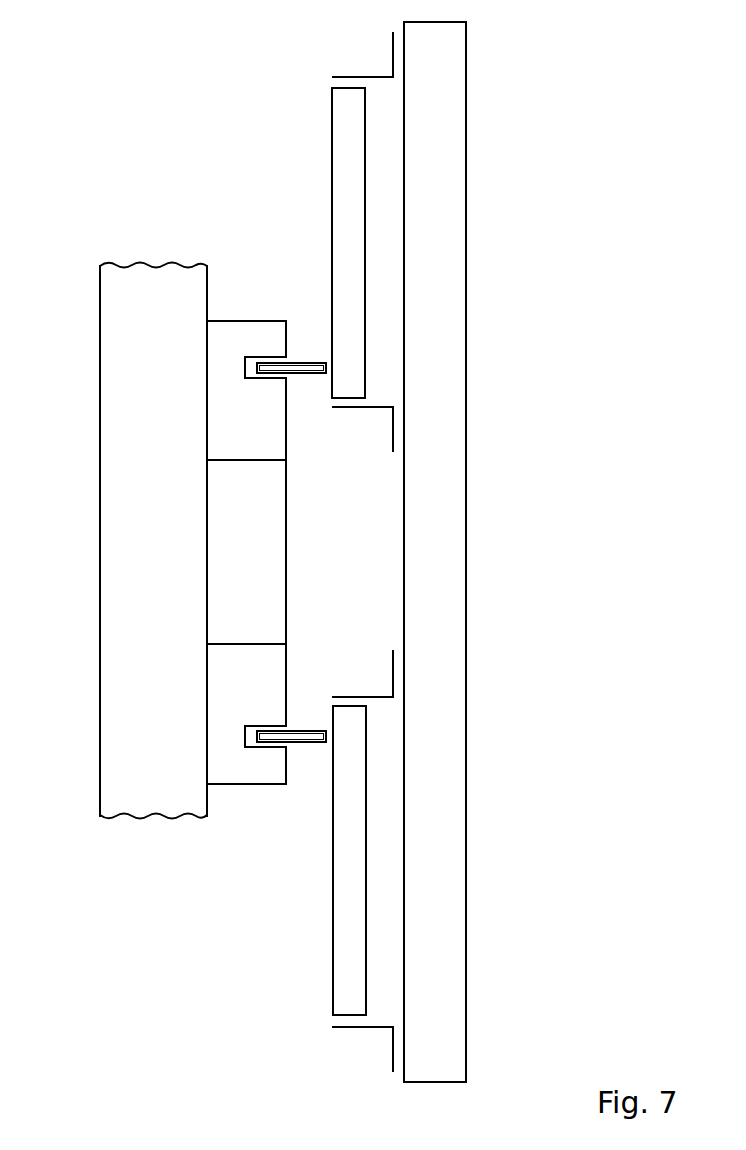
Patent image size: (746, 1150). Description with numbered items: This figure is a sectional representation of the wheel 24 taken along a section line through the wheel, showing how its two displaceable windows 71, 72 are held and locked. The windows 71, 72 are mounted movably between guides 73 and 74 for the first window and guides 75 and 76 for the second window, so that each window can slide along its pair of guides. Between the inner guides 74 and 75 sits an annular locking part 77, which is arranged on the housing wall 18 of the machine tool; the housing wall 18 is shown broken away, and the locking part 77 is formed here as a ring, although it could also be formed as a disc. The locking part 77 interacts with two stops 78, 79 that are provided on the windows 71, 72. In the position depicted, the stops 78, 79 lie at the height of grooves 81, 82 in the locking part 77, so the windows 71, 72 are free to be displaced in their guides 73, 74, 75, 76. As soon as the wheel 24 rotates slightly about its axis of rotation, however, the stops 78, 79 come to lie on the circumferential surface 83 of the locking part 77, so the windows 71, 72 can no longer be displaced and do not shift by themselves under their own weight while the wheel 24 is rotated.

The housing wall 18 is at (128, 749).
The wheel 24 is at (445, 225).
The displaceable window 71 is at (348, 178).
The displaceable window 72 is at (348, 927).
The guide 73 is at (362, 77).
The guide 74 is at (373, 402).
The guide 75 is at (355, 697).
The guide 76 is at (372, 1025).
The locking part 77 is at (318, 617).
The stop 78 is at (300, 742).
The stop 79 is at (307, 365).
The groove 81 is at (252, 375).
The groove 82 is at (252, 732).
The circumferential surface 83 is at (235, 318).